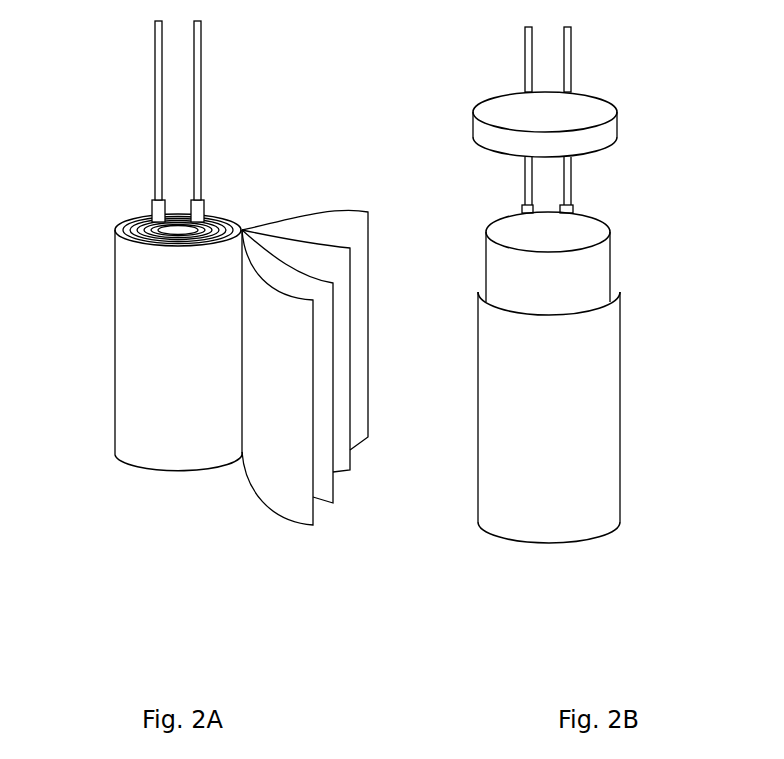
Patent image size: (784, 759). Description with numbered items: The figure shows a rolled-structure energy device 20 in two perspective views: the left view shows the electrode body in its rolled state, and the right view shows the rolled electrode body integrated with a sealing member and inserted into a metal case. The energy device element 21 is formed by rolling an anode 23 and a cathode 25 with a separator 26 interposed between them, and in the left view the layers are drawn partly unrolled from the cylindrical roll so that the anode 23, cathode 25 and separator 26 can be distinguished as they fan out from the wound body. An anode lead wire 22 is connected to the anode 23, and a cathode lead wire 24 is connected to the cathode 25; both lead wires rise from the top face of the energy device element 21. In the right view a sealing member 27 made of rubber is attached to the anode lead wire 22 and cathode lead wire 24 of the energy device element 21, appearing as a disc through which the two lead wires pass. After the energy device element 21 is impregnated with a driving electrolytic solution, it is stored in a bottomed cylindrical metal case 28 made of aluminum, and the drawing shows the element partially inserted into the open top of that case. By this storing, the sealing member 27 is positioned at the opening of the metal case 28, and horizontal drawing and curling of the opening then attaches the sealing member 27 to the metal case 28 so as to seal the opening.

In FIG. 2A, the rolled-structure energy device 20 is at (98, 589).
In FIG. 2A, the energy device element 21 is at (118, 462).
In FIG. 2B, the energy device element 21 is at (600, 273).
In FIG. 2A, the anode lead wire 22 is at (153, 108).
In FIG. 2B, the anode lead wire 22 is at (525, 80).
In FIG. 2A, the anode 23 is at (348, 468).
In FIG. 2A, the cathode lead wire 24 is at (200, 127).
In FIG. 2B, the cathode lead wire 24 is at (573, 82).
In FIG. 2A, the cathode 25 is at (256, 505).
In FIG. 2A, the separator 26 is at (352, 213).
In FIG. 2B, the sealing member 27 is at (618, 135).
In FIG. 2B, the metal case 28 is at (600, 456).